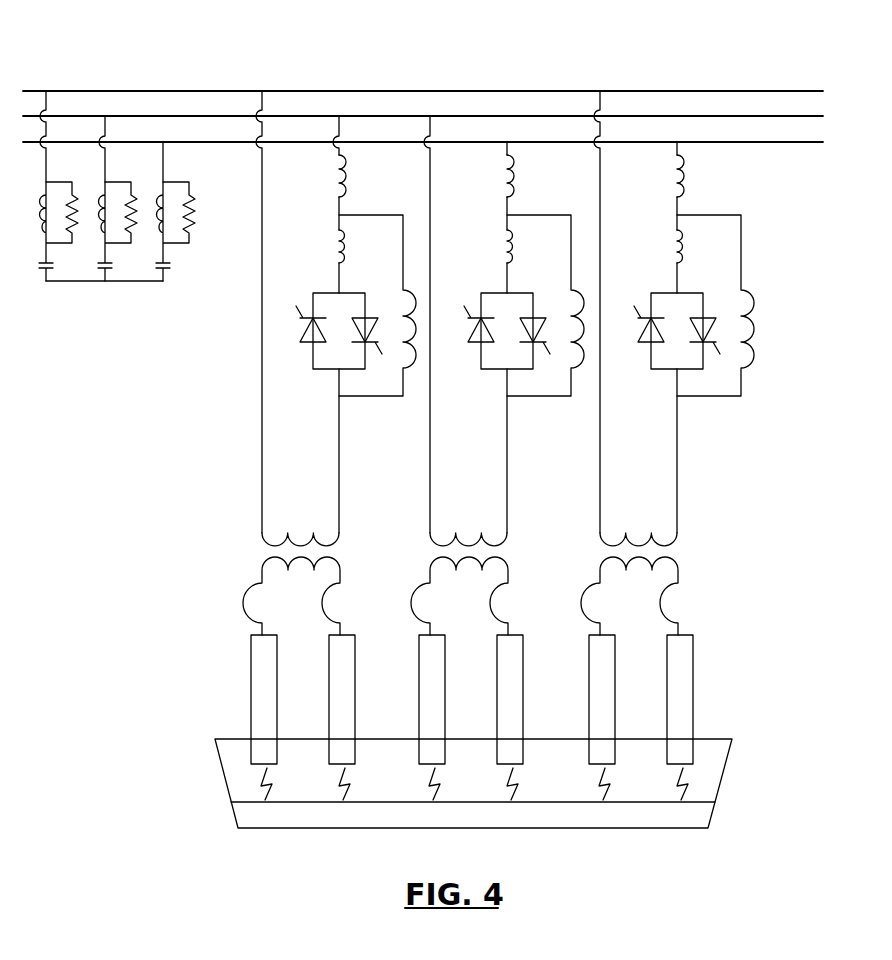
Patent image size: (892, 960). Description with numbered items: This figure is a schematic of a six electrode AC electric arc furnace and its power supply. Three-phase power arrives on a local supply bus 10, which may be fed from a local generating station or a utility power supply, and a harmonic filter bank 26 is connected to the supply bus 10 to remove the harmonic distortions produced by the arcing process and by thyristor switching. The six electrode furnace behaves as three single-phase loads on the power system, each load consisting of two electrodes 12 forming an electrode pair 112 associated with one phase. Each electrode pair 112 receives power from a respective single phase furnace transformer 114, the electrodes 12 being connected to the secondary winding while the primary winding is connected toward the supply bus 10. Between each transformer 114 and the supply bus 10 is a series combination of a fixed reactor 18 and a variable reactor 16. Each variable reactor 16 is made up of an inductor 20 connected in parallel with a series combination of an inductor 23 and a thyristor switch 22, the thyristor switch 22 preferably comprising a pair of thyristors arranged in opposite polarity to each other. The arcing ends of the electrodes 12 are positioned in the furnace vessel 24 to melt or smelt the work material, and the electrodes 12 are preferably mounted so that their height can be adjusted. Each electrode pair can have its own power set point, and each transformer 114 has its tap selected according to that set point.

The supply bus 10 is at (749, 75).
The electrodes 12 is at (250, 687).
The variable reactor 16 is at (322, 403).
The fixed reactor 18 is at (346, 176).
The inductor 20 is at (408, 372).
The thyristor switch 22 is at (318, 292).
The inductor 23 is at (345, 248).
The furnace vessel 24 is at (722, 777).
The harmonic filter bank 26 is at (113, 300).
The electrode pair 112 is at (320, 532).
The single phase furnace transformer 114 is at (352, 548).